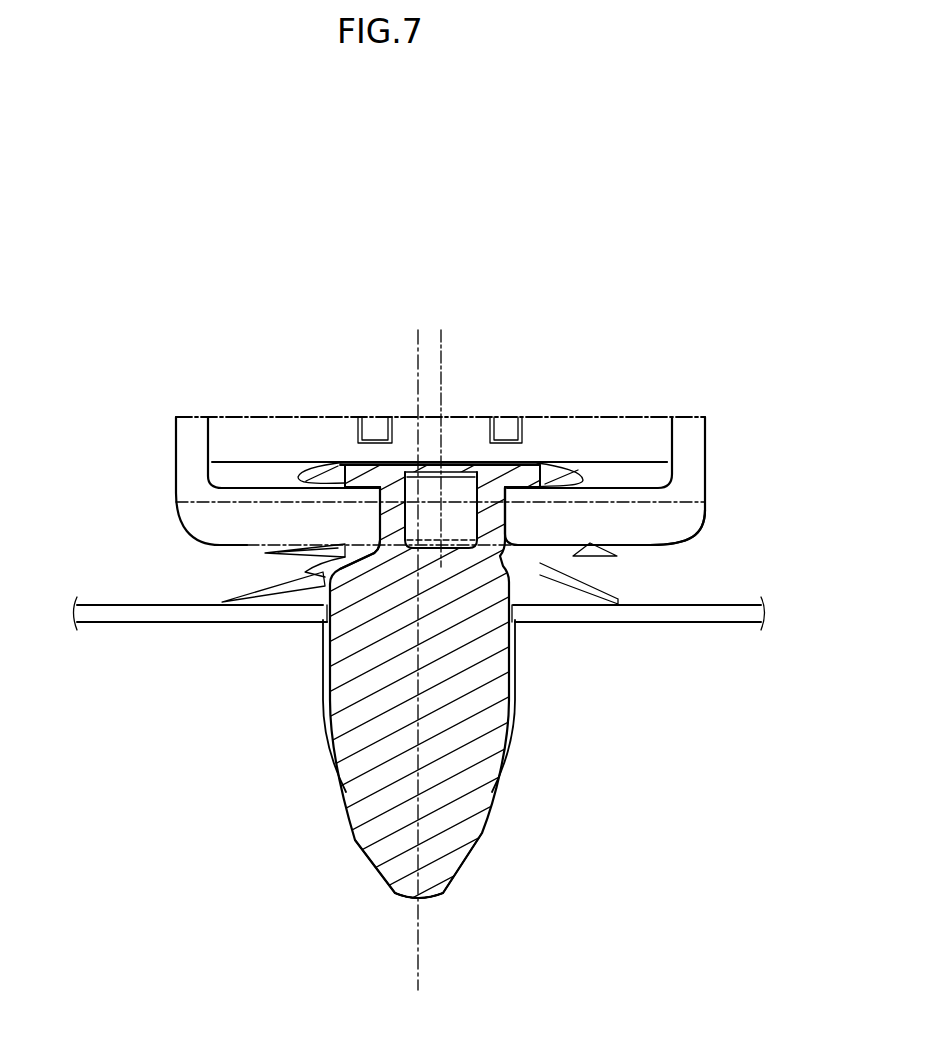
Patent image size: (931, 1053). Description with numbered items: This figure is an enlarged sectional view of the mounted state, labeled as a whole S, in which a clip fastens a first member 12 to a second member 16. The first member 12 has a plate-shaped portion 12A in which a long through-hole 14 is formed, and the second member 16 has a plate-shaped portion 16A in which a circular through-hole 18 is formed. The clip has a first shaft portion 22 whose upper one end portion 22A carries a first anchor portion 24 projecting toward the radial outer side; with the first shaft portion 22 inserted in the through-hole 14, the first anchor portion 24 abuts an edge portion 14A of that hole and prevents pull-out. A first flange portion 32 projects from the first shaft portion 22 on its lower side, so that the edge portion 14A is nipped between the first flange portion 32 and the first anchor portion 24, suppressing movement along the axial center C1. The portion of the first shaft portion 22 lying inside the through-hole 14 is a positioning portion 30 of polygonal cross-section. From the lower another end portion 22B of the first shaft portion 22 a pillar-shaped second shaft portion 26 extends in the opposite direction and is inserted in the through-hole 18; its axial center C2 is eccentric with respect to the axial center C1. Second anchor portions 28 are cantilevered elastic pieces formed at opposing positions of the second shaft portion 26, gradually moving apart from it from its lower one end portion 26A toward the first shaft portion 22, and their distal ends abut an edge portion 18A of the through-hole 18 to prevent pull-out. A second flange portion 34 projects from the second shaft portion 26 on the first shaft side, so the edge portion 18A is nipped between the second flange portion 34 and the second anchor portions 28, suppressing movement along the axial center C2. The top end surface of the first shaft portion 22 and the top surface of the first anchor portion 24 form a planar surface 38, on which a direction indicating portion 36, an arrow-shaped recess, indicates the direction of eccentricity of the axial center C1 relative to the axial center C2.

The first member 12 is at (712, 487).
The plate-shaped portion 12A is at (650, 546).
The through-hole 14 is at (503, 509).
The edge portion 14A is at (555, 487).
The second member 16 is at (713, 627).
The plate-shaped portion 16A is at (658, 624).
The through-hole 18 is at (482, 632).
The edge portion 18A is at (505, 607).
The first shaft portion 22 is at (440, 517).
The one end portion 22A is at (413, 460).
The another end portion 22B is at (377, 546).
The first anchor portion 24 is at (592, 482).
The second shaft portion 26 is at (475, 856).
The one end portion 26A is at (430, 901).
The second anchor portions 28 is at (323, 707).
The positioning portion 30 is at (376, 520).
The first flange portion 32 is at (650, 548).
The second flange portion 34 is at (222, 601).
The direction indicating portion 36 is at (538, 462).
The planar surface 38 is at (337, 462).
The axial center C1 is at (443, 335).
The axial center C2 is at (418, 975).
The clip assembly S is at (729, 365).